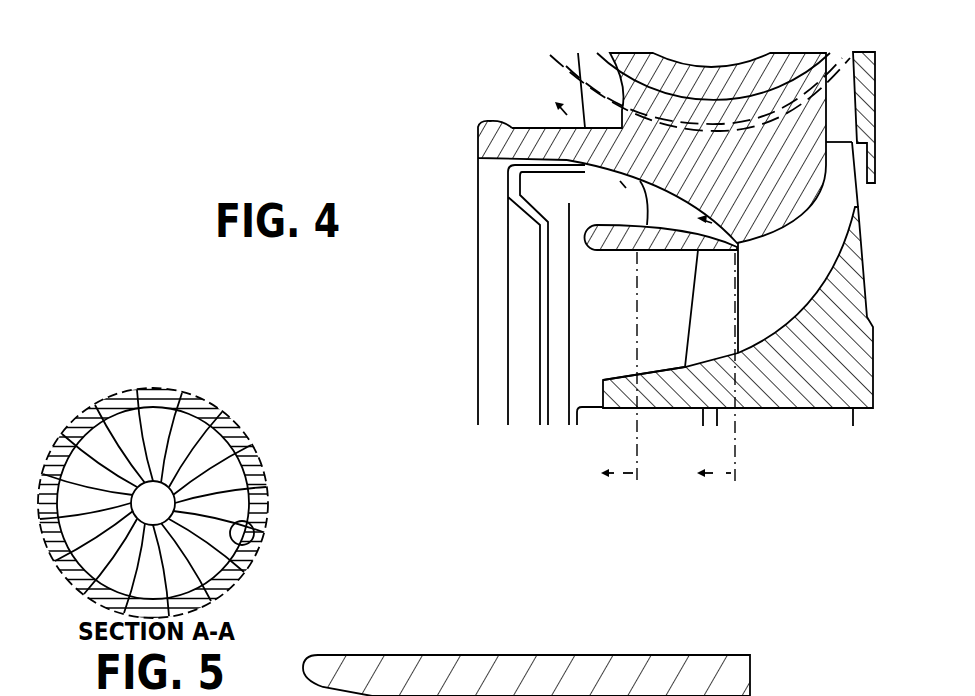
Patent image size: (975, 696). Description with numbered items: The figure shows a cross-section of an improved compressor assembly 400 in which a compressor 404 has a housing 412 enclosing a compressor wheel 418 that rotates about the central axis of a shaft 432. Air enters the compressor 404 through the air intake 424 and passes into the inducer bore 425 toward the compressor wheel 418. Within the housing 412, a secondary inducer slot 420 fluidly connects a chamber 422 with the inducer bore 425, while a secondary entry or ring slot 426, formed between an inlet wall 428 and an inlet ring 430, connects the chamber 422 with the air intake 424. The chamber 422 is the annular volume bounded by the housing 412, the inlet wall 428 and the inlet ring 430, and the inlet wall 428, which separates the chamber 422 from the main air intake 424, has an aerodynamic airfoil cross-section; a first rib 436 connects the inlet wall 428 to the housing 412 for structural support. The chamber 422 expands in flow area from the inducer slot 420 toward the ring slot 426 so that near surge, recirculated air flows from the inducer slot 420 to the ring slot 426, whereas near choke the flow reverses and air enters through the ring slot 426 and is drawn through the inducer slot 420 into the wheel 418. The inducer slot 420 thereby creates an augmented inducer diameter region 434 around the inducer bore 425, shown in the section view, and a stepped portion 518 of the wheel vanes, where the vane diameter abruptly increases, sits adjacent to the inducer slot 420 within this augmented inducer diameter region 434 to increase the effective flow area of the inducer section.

In FIG. 4, the compressor assembly 400 is at (362, 135).
In FIG. 4, the compressor 404 is at (471, 121).
In FIG. 4, the housing 412 is at (548, 130).
In FIG. 4, the compressor wheel 418 is at (841, 382).
In FIG. 5, the compressor wheel 418 is at (203, 442).
In FIG. 4, the secondary inducer slot 420 is at (742, 245).
In FIG. 4, the chamber 422 is at (578, 194).
In FIG. 4, the air intake 424 is at (462, 333).
In FIG. 4, the inducer bore 425 is at (632, 252).
In FIG. 5, the inducer bore 425 is at (254, 541).
In FIG. 4, the secondary entry or ring slot 426 is at (578, 228).
In FIG. 4, the inlet wall 428 is at (643, 252).
In FIG. 4, the inlet ring 430 is at (512, 218).
In FIG. 4, the shaft 432 is at (696, 433).
In FIG. 5, the augmented inducer diameter region 434 is at (250, 447).
In FIG. 4, the first rib 436 is at (672, 212).
In FIG. 4, the stepped portion 518 is at (727, 256).